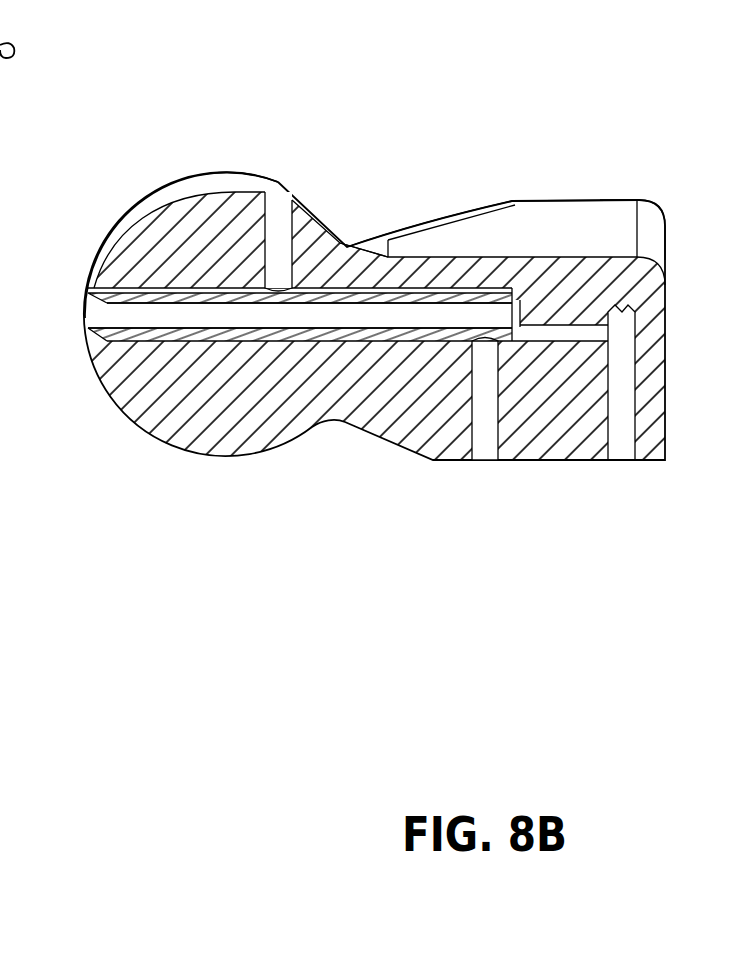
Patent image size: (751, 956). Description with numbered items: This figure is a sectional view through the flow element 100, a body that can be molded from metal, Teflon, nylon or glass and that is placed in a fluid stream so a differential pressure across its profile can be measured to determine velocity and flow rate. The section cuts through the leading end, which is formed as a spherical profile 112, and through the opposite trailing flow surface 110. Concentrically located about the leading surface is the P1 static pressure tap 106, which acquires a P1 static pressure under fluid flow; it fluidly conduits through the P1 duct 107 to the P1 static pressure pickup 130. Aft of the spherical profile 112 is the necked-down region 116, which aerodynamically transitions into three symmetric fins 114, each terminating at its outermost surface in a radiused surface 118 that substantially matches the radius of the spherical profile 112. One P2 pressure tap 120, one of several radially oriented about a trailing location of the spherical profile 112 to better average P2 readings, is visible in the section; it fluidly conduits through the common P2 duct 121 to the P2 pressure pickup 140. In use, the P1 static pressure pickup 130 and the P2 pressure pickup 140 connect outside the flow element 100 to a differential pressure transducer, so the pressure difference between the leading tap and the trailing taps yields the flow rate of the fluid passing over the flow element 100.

The flow element 100 is at (220, 85).
The P1 static pressure tap 106 is at (97, 311).
The P1 duct 107 is at (230, 315).
The trailing flow surface 110 is at (673, 298).
The spherical profile 112 is at (160, 196).
The fins 114 is at (585, 238).
The necked-down region 116 is at (330, 208).
The radiused surface 118 is at (568, 196).
The P2 pressure tap 120 is at (290, 197).
The P2 duct 121 is at (347, 248).
The P1 static pressure pickup 130 is at (625, 432).
The P2 pressure pickup 140 is at (486, 464).